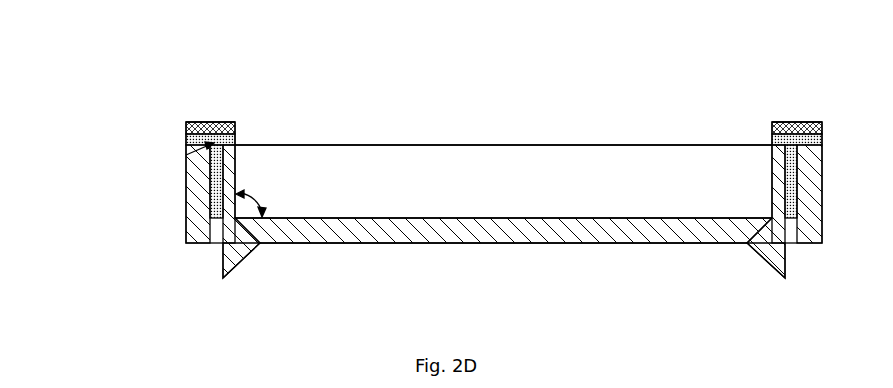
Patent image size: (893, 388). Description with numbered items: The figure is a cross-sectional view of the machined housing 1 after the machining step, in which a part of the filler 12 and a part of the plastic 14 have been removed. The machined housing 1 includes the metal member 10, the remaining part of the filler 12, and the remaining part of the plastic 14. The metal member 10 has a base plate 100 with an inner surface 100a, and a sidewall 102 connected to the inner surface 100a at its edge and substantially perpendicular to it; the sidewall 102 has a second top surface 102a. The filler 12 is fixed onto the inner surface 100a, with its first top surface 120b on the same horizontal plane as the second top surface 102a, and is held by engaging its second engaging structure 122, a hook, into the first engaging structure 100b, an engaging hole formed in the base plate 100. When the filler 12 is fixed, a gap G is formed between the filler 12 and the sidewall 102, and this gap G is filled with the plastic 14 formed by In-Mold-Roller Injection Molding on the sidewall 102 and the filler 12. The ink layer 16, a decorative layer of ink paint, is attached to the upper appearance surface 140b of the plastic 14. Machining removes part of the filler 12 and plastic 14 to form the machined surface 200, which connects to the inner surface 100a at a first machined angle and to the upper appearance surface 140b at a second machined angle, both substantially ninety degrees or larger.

The machined housing 1 is at (142, 66).
The metal member 10 is at (427, 217).
The base plate 100 is at (427, 227).
The inner surface 100a is at (488, 218).
The first engaging structure 100b is at (211, 241).
The sidewall 102 is at (451, 161).
The second top surface 102a is at (198, 122).
The filler 12 is at (492, 169).
The first top surface 120b is at (228, 122).
The second engaging structure 122 is at (240, 258).
The plastic 14 is at (186, 141).
The upper appearance surface 140b is at (214, 122).
The ink layer 16 is at (186, 128).
The machined surface 200 is at (235, 182).
The gap G is at (192, 171).